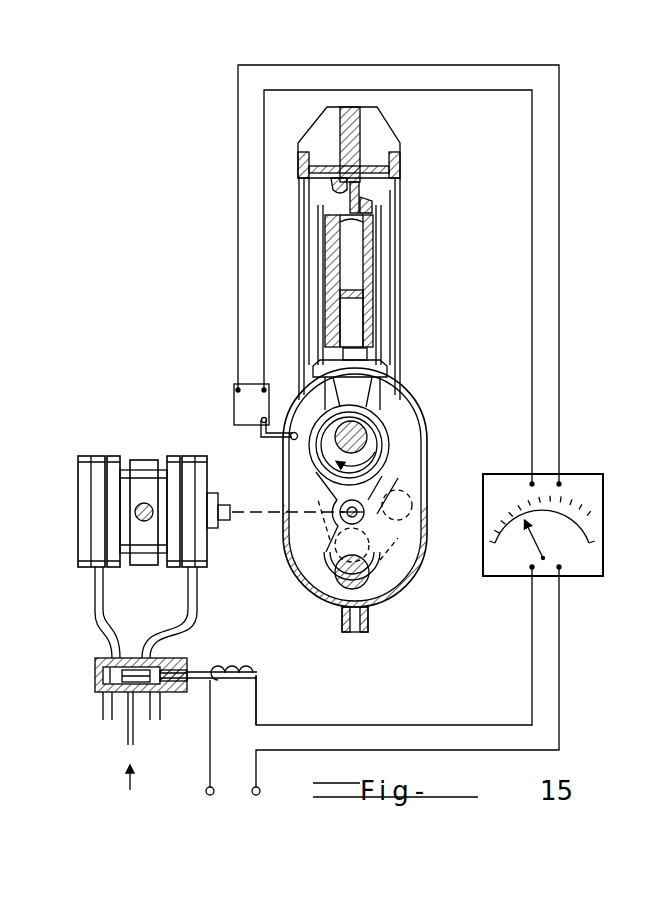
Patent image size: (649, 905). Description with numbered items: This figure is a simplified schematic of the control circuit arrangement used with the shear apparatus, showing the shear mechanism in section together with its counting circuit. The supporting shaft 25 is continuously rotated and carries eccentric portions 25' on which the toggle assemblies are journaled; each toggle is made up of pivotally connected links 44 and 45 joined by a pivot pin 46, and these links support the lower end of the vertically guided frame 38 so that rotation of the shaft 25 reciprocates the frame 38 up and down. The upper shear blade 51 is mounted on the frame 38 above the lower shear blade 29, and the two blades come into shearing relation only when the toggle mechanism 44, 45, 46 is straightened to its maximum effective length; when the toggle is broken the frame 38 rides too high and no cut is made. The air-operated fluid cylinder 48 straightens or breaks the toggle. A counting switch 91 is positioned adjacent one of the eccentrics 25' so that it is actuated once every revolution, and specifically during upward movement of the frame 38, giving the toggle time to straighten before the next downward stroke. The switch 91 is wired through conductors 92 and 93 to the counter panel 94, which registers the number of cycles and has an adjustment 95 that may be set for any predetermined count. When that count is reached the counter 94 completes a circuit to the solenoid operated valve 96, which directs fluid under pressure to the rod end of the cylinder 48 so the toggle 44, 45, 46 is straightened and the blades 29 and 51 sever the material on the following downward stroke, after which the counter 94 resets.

The supporting shaft 25 is at (388, 440).
The eccentric portions 25' is at (402, 456).
The shear blade 29 is at (368, 209).
The frame member 38 is at (395, 266).
The toggle link 44 is at (402, 477).
The toggle link 45 is at (365, 533).
The pivot pin 46 is at (345, 517).
The fluid cylinder 48 is at (112, 456).
The shear blade 51 is at (352, 190).
The switch 91 is at (234, 402).
The conductor 92 is at (524, 191).
The conductor 93 is at (556, 191).
The counter panel 94 is at (596, 522).
The adjustment 95 is at (538, 534).
The solenoid operated valve 96 is at (188, 660).